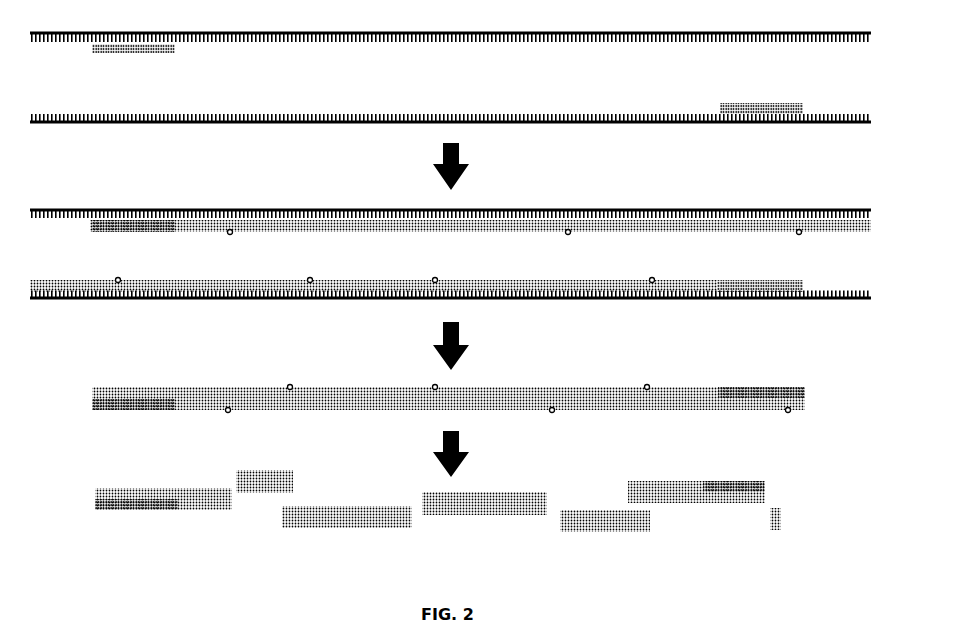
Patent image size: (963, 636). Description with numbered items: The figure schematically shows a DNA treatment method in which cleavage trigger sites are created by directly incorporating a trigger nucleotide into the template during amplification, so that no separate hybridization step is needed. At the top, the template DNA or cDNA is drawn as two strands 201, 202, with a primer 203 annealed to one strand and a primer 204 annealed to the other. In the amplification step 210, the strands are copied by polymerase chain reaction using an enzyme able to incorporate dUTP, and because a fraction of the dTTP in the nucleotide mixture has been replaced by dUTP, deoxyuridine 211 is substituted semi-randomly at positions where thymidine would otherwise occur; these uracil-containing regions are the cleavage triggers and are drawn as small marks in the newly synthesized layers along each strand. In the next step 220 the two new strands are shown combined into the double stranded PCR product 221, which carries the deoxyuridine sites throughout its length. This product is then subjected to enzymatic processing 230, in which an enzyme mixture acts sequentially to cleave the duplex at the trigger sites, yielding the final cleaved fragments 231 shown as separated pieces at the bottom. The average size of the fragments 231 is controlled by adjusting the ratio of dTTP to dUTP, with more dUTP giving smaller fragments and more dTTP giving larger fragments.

The strand 201 is at (76, 32).
The strand 202 is at (72, 131).
The primer 203 is at (131, 55).
The primer 204 is at (762, 101).
The amplification step 210 is at (479, 166).
The deoxyuridine 211 is at (646, 277).
The PCR product formation step 220 is at (479, 346).
The double stranded PCR product 221 is at (601, 398).
The enzymatic processing 230 is at (479, 454).
The cleaved fragments 231 is at (625, 490).